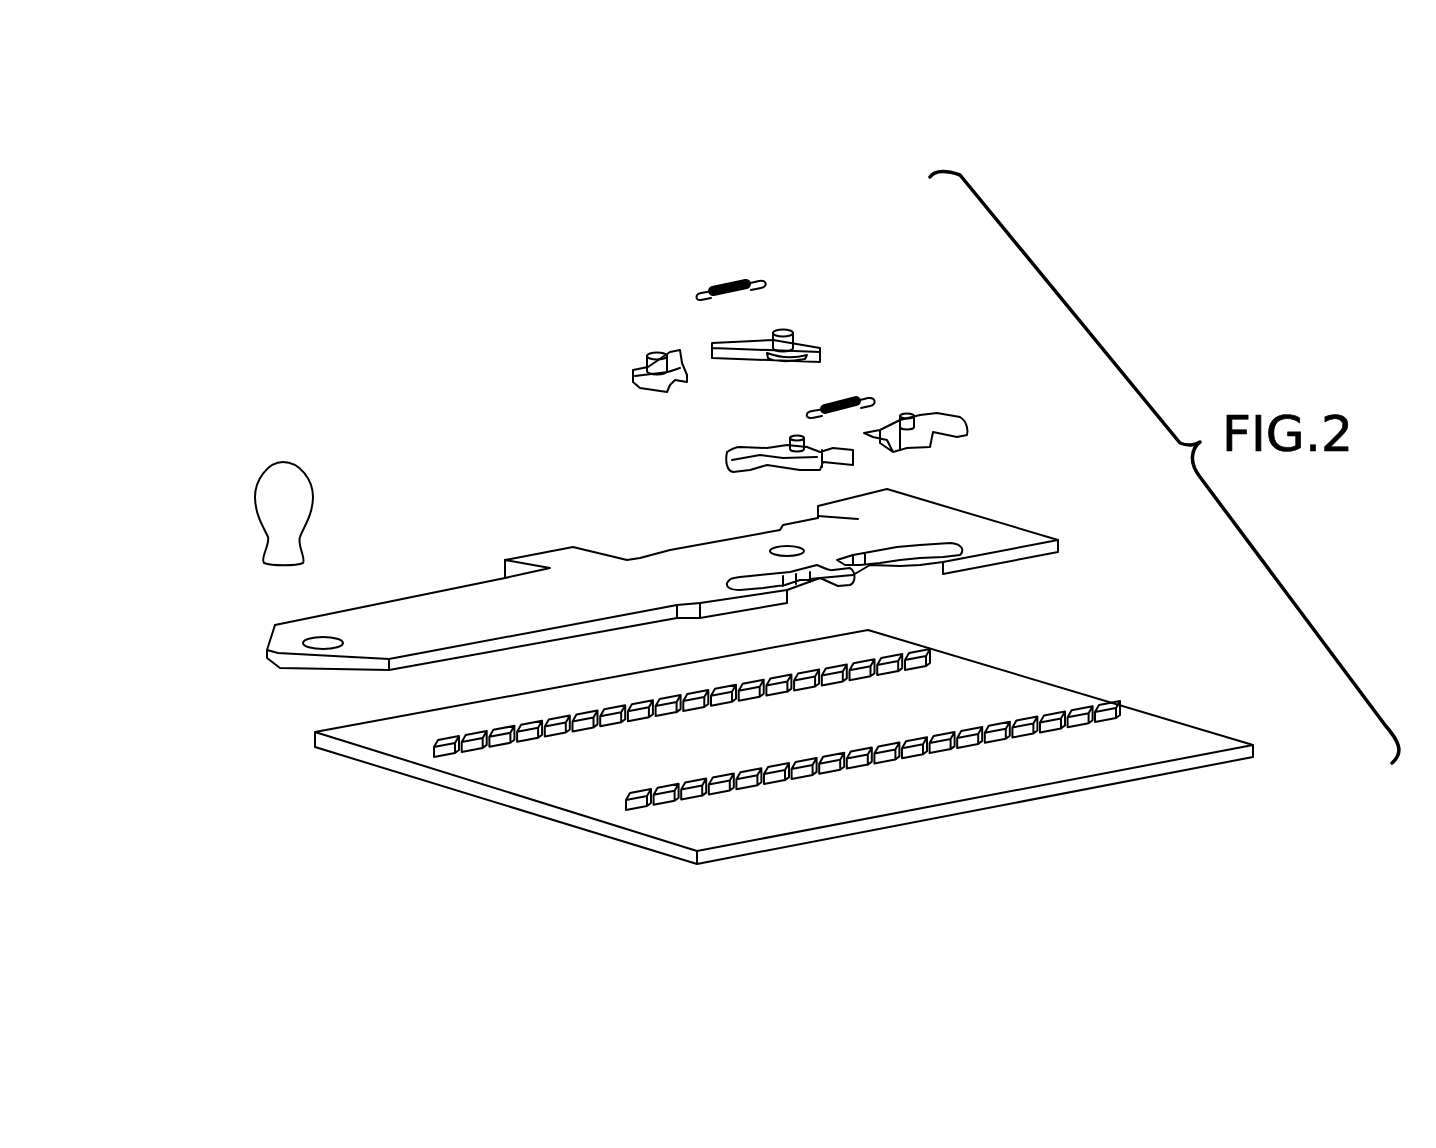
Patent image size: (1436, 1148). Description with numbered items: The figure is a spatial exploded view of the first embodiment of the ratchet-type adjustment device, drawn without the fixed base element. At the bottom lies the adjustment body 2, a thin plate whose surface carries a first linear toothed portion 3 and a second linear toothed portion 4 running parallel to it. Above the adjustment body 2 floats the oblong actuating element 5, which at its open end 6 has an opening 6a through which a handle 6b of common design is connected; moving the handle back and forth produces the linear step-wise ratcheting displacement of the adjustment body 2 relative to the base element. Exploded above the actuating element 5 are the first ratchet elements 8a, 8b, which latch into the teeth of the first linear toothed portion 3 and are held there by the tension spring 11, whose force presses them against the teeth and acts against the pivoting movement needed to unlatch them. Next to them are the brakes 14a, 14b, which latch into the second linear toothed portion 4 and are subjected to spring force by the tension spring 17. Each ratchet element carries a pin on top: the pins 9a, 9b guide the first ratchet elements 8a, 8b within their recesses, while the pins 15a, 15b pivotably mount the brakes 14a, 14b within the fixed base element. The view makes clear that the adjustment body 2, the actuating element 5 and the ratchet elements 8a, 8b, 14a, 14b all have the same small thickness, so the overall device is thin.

The adjustment body 2 is at (784, 727).
The first linear toothed portion 3 is at (1111, 712).
The second linear toothed portion 4 is at (921, 657).
The actuating element 5 is at (637, 599).
The open end 6 is at (268, 658).
The opening 6a is at (326, 638).
The handle 6b is at (262, 476).
The first ratchet element 8a is at (748, 431).
The first ratchet element 8b is at (959, 410).
The pin 9a is at (796, 436).
The pin 9b is at (914, 414).
The tension spring 11 is at (858, 398).
The brake 14a is at (602, 332).
The brake 14b is at (817, 294).
The pin 15a is at (657, 352).
The pin 15b is at (784, 330).
The tension spring 17 is at (735, 280).